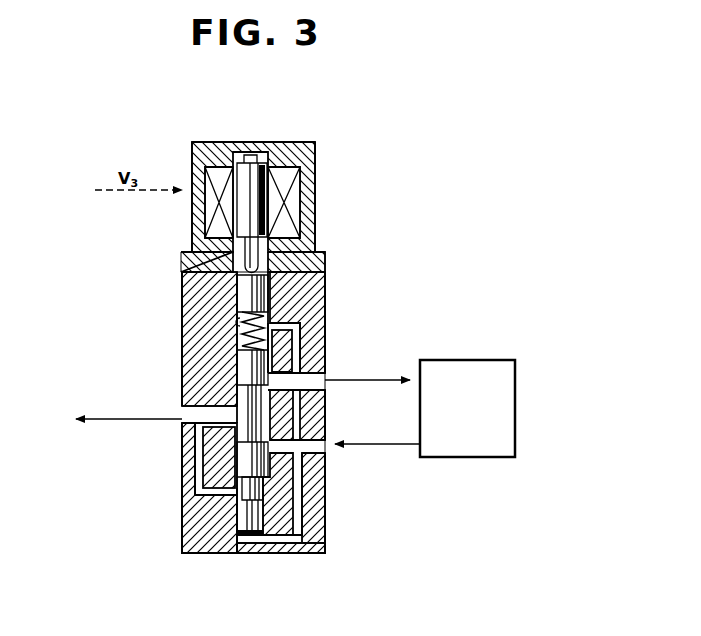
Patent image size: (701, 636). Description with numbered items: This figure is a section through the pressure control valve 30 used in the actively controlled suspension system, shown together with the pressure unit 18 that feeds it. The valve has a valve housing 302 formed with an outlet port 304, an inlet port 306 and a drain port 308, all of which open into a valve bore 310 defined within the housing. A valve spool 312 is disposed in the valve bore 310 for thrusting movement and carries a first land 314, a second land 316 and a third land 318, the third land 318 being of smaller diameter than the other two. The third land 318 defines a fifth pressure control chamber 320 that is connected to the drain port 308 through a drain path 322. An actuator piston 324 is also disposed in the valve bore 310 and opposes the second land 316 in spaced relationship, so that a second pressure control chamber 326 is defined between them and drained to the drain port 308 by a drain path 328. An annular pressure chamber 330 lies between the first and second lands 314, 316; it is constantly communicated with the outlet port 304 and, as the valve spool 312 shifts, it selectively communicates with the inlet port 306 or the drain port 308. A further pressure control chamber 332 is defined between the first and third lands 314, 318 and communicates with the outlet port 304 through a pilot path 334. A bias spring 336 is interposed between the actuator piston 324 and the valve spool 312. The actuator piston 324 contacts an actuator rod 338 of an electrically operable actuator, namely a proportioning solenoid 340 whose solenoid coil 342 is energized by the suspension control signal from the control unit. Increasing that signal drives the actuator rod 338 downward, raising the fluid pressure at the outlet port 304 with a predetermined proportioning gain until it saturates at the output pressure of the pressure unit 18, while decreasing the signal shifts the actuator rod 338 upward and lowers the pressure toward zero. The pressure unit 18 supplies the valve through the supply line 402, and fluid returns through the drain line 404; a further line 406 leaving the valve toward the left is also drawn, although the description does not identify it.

The pressure control valve 30 is at (332, 267).
The pressure unit 18 is at (440, 360).
The valve housing 302 is at (196, 548).
The outlet port 304 is at (192, 398).
The inlet port 306 is at (330, 446).
The drain port 308 is at (312, 352).
The valve bore 310 is at (243, 290).
The valve spool 312 is at (245, 455).
The first land 314 is at (205, 467).
The second land 316 is at (243, 365).
The third land 318 is at (233, 540).
The fifth pressure control chamber 320 is at (247, 540).
The drain path 322 is at (307, 552).
The actuator piston 324 is at (181, 272).
The second pressure control chamber 326 is at (298, 322).
The drain path 328 is at (298, 332).
The annular pressure chamber 330 is at (306, 384).
The pressure control chamber 332 is at (262, 543).
The pilot path 334 is at (210, 500).
The bias spring 336 is at (240, 322).
The actuator rod 338 is at (260, 257).
The proportioning solenoid 340 is at (318, 178).
The solenoid coil 342 is at (285, 175).
The supply line 402 is at (343, 440).
The drain line 404 is at (331, 414).
The outlet port 406 is at (100, 419).